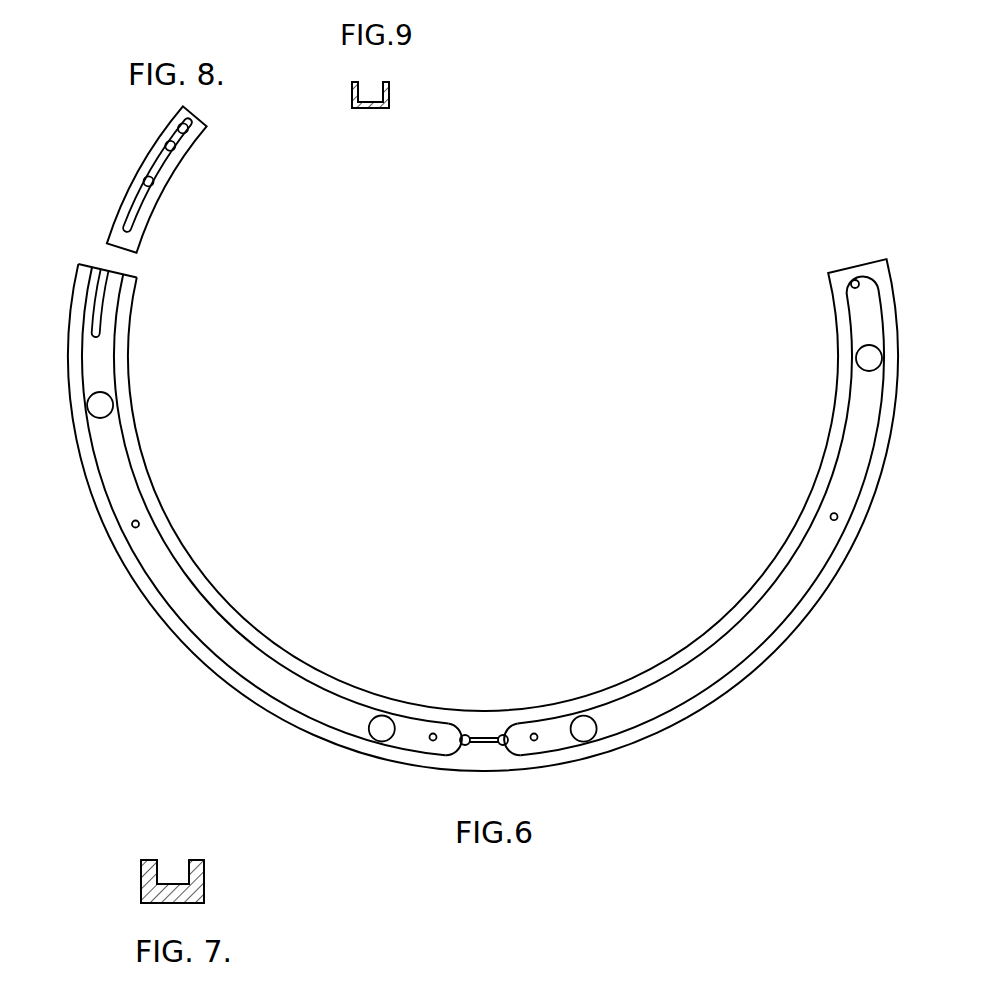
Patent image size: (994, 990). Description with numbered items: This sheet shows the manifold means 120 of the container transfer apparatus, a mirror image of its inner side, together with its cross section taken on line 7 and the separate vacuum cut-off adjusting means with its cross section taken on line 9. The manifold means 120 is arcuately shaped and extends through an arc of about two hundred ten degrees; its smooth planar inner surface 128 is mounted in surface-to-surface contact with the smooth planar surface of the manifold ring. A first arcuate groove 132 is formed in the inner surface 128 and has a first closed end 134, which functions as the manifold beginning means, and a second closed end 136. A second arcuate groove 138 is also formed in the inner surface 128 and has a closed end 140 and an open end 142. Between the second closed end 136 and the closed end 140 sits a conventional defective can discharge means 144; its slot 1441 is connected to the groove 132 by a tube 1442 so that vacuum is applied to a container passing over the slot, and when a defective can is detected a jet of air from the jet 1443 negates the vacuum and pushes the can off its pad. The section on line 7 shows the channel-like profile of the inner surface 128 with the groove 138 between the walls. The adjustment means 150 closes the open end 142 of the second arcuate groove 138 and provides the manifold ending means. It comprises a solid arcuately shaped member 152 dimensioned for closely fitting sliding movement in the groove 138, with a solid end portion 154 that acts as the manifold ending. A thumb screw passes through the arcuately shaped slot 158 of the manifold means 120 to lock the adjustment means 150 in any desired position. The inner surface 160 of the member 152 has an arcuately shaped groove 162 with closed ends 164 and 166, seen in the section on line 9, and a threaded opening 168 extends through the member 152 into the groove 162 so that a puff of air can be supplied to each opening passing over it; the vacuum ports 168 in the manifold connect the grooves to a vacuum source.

In FIG. 6, the manifold means 120 is at (803, 656).
In FIG. 6, the inner surface 128 is at (850, 390).
In FIG. 7, the inner surface 128 is at (150, 862).
In FIG. 6, the first arcuate groove 132 is at (848, 460).
In FIG. 6, the first closed end 134 is at (851, 287).
In FIG. 6, the second closed end 136 is at (525, 720).
In FIG. 6, the second arcuate groove 138 is at (118, 509).
In FIG. 7, the second arcuate groove 138 is at (175, 863).
In FIG. 6, the closed end 140 is at (437, 720).
In FIG. 6, the open end 142 is at (131, 272).
In FIG. 6, the defective can discharge means 144 is at (485, 718).
In FIG. 6, the slot 1441 is at (483, 744).
In FIG. 6, the tube 1442 is at (460, 745).
In FIG. 6, the jet 1443 is at (430, 739).
In FIG. 8, the adjustment means 150 is at (218, 132).
In FIG. 8, the arcuately shaped member 152 is at (175, 172).
In FIG. 9, the arcuately shaped member 152 is at (390, 100).
In FIG. 8, the solid end portion 154 is at (125, 252).
In FIG. 6, the arcuately shaped slot 158 is at (97, 306).
In FIG. 8, the inner surface 160 is at (124, 228).
In FIG. 9, the inner surface 160 is at (390, 82).
In FIG. 9, the arcuately shaped groove 162 is at (372, 80).
In FIG. 8, the closed end 164 is at (128, 212).
In FIG. 8, the closed end 166 is at (182, 125).
In FIG. 6, the threaded opening 168 is at (112, 401).
In FIG. 8, the threaded opening 168 is at (188, 132).
In FIG. 6, the section line 7— 7 is at (130, 620).
In FIG. 8, the section line 9— 9 is at (123, 184).